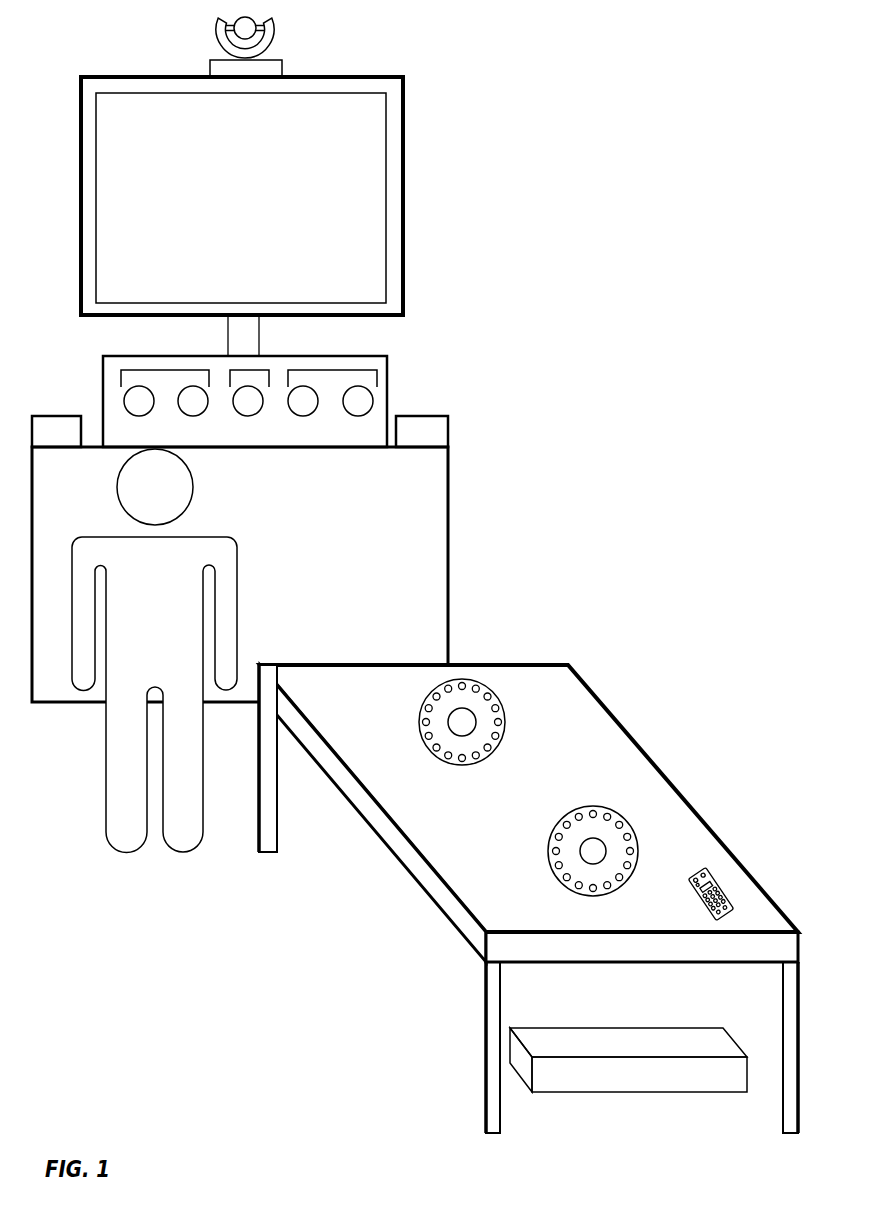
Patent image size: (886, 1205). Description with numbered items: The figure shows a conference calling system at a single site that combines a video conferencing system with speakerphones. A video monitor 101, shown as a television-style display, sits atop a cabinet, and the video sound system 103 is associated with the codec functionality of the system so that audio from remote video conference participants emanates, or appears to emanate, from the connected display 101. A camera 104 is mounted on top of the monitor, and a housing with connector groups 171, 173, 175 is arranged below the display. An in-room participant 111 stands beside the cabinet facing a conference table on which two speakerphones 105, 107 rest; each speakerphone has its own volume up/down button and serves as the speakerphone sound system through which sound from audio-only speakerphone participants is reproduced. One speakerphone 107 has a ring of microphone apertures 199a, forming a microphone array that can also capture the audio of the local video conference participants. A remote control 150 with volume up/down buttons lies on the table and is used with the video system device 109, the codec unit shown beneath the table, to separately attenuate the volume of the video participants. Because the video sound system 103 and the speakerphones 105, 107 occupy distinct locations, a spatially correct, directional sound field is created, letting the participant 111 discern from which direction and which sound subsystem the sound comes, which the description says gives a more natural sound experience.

The video monitor 101 is at (322, 179).
The video sound system 103 is at (470, 309).
The camera 104 is at (220, 70).
The speakerphone 105 is at (550, 866).
The speakerphone 107 is at (502, 683).
The video system device 109 is at (612, 1077).
The participant 111 is at (105, 827).
The remote control 150 is at (727, 888).
The audio/video input connectors 171 is at (150, 370).
The audio/video input connector 173 is at (253, 370).
The audio/video input connectors 175 is at (358, 371).
The microphone apertures 199a is at (499, 718).